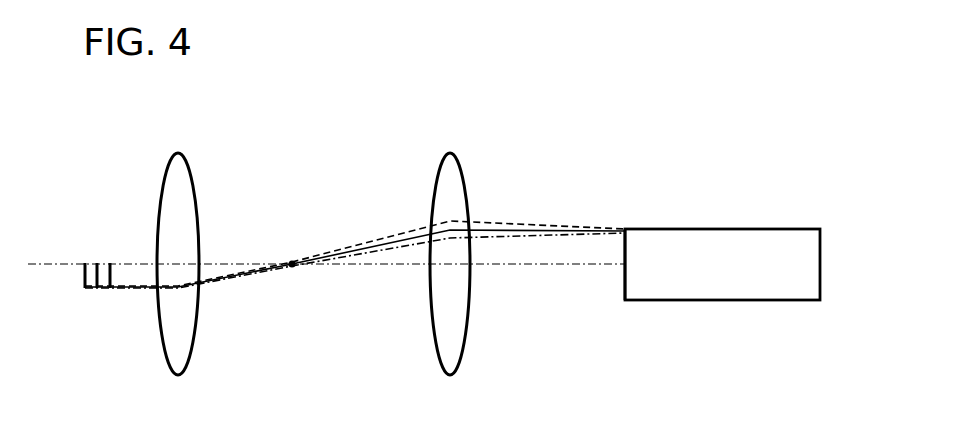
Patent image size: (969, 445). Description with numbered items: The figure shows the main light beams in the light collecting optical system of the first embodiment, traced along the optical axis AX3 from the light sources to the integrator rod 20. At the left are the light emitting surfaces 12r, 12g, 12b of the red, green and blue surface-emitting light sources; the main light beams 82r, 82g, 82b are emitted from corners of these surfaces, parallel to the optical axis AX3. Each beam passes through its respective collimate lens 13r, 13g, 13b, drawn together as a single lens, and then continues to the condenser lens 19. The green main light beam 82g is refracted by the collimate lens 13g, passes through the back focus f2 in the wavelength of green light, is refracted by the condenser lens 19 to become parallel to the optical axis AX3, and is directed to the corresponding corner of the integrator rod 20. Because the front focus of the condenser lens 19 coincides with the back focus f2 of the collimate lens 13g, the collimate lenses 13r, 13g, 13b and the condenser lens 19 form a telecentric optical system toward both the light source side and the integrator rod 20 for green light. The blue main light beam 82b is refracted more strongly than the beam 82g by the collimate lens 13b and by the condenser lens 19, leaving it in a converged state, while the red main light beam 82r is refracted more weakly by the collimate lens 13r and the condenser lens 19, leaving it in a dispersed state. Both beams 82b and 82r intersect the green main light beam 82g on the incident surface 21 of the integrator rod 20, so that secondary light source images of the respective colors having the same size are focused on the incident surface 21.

The optical axis AX3 is at (53, 264).
The light emitting surface 12r is at (84, 262).
The light emitting surface 12g is at (97, 289).
The light emitting surface 12b is at (110, 262).
The collimate lens 13r is at (210, 223).
The collimate lens 13g is at (210, 223).
The collimate lens 13b is at (180, 153).
The main light beam 82r is at (312, 260).
The main light beam 82g is at (347, 252).
The main light beam 82b is at (380, 237).
The back focus f2 is at (290, 268).
The condenser lens 19 is at (450, 155).
The integrator rod 20 is at (722, 228).
The incident surface 21 is at (625, 287).